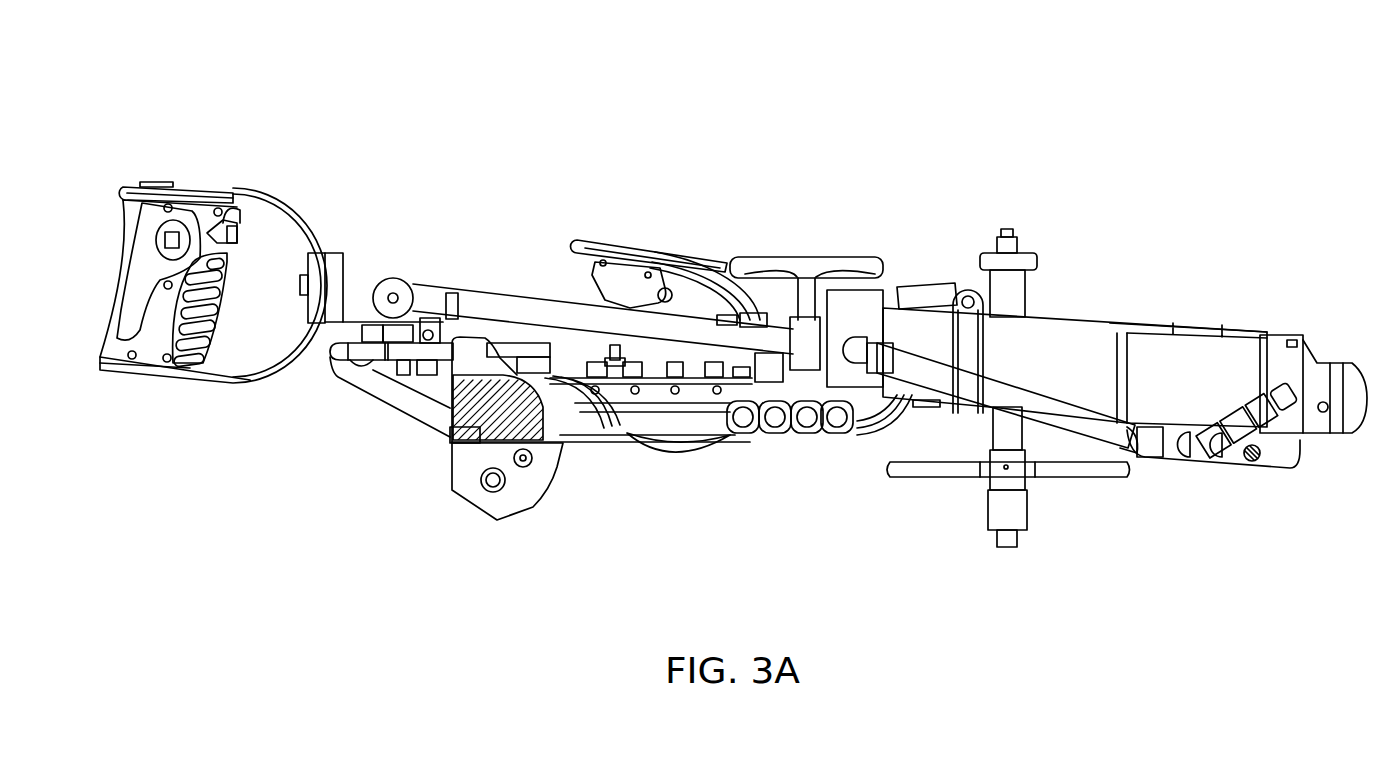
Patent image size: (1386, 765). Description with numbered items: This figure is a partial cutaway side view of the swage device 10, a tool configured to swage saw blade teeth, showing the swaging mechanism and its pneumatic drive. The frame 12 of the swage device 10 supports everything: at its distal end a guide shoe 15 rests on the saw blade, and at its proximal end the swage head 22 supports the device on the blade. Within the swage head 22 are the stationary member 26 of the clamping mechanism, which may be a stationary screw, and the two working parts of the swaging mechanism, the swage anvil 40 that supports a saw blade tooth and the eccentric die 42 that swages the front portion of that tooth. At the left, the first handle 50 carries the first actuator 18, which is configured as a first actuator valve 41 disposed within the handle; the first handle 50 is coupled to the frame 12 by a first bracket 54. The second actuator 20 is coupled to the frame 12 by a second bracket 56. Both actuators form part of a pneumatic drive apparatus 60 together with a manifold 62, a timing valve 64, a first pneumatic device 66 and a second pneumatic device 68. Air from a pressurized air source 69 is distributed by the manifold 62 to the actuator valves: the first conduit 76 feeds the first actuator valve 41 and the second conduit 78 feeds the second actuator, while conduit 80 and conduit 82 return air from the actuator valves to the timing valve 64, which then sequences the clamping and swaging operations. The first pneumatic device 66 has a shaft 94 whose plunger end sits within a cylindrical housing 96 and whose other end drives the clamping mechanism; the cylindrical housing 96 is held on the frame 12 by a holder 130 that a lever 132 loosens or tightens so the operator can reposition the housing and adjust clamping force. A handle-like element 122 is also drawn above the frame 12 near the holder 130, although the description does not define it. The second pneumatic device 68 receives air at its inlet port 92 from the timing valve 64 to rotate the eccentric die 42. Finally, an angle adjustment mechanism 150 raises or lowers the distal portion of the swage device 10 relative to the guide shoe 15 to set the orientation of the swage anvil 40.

The swage device 10 is at (1080, 120).
The frame 12 is at (595, 443).
The guide shoe 15 is at (900, 475).
The first actuator 18 is at (233, 232).
The second actuator 20 is at (668, 290).
The swage head 22 is at (452, 490).
The stationary member 26 is at (493, 492).
The swage anvil 40 is at (487, 453).
The first actuator valve 41 is at (162, 235).
The eccentric die 42 is at (532, 462).
The first handle 50 is at (140, 262).
The first bracket 54 is at (293, 210).
The second bracket 56 is at (712, 258).
The pneumatic drive apparatus 60 is at (1119, 272).
The manifold 62 is at (1177, 332).
The timing valve 64 is at (615, 350).
The first pneumatic device 66 is at (1138, 333).
The second pneumatic device 68 is at (1250, 330).
The pressurized air source 69 is at (1325, 278).
The first conduit 76 is at (133, 447).
The second conduit 78 is at (612, 167).
The conduit 80 is at (167, 462).
The conduit 82 is at (562, 150).
The inlet port 92 is at (1250, 460).
The shaft 94 is at (468, 290).
The cylindrical housing 96 is at (1155, 378).
The T handle 122 is at (860, 258).
The holder 130 is at (970, 295).
The lever 132 is at (917, 287).
The angle adjustment mechanism 150 is at (1030, 253).